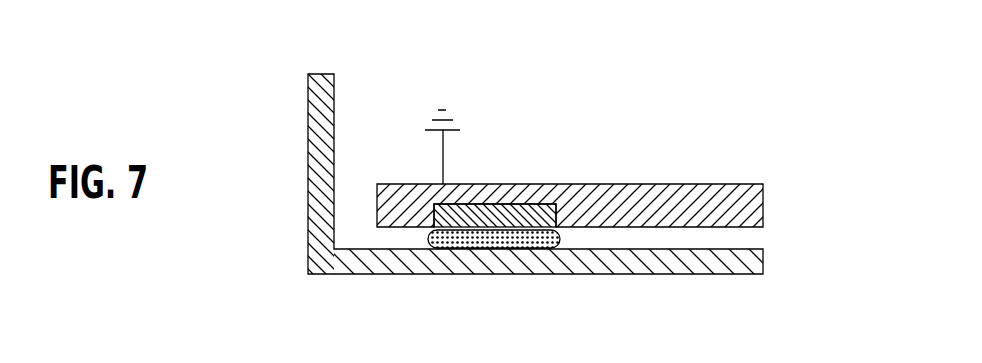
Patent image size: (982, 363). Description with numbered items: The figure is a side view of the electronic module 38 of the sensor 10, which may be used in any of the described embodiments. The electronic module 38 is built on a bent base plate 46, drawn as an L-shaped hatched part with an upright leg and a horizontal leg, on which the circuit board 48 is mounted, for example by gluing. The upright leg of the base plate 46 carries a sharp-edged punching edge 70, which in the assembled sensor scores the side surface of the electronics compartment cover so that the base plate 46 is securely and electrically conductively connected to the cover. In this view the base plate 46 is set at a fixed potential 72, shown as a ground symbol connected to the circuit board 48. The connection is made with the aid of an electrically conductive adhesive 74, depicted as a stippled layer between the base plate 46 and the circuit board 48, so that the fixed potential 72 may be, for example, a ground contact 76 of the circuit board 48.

The sensor 10 is at (798, 77).
The electronic module 38 is at (797, 200).
The base plate 46 is at (322, 208).
The circuit board 48 is at (660, 198).
The punching edge 70 is at (321, 128).
The fixed potential 72 is at (447, 113).
The electrically conductive adhesive 74 is at (485, 233).
The ground contact 76 is at (497, 217).